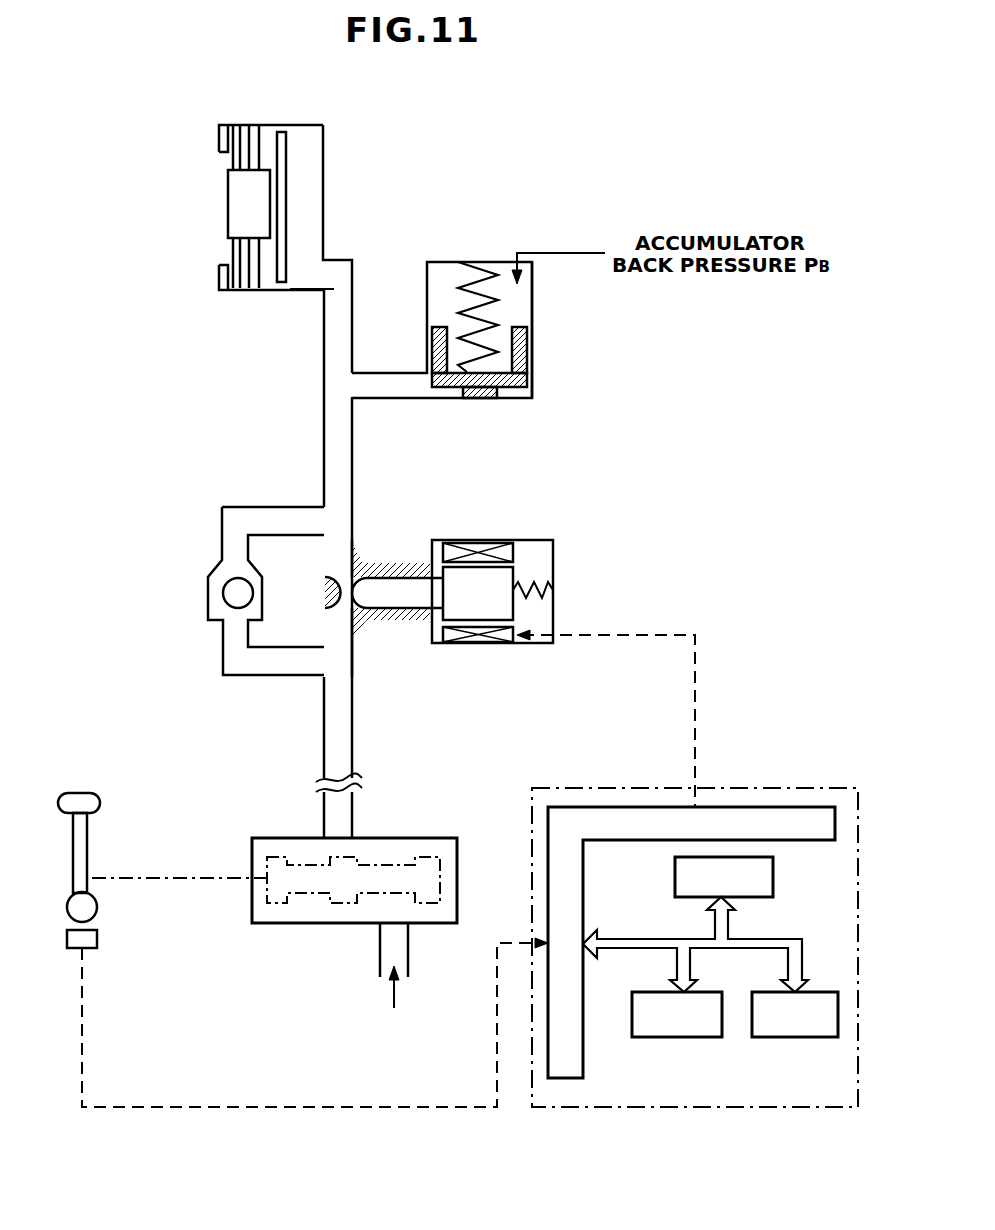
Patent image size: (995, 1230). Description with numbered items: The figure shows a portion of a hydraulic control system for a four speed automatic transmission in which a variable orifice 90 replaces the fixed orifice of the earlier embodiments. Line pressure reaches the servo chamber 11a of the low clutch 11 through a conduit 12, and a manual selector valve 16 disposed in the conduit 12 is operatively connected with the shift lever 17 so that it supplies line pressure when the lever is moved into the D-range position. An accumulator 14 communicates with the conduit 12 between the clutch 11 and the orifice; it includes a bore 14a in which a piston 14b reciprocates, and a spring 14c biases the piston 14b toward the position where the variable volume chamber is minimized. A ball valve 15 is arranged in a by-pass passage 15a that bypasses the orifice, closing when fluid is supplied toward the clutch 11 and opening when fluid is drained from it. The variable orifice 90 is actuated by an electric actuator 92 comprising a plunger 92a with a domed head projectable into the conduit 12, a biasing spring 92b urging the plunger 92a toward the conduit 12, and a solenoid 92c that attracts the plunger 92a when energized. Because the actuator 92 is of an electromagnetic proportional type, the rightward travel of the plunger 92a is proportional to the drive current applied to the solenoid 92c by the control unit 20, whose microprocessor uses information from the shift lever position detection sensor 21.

The low clutch 11 is at (315, 125).
The servo chamber 11a is at (323, 212).
The conduit 12 is at (318, 425).
The accumulator 14 is at (478, 310).
The bore 14a is at (526, 300).
The piston 14b is at (529, 383).
The spring 14c is at (460, 283).
The ball valve 15 is at (215, 568).
The by-pass passage 15a is at (255, 505).
The manual selector valve 16 is at (392, 838).
The shift lever 17 is at (100, 803).
The control unit 20 is at (617, 788).
The shift lever position detection sensor 21 is at (97, 940).
The variable orifice 90 is at (363, 565).
The electric actuator 92 is at (523, 653).
The plunger 92a is at (398, 600).
The biasing spring 92b is at (553, 582).
The solenoid 92c is at (480, 643).